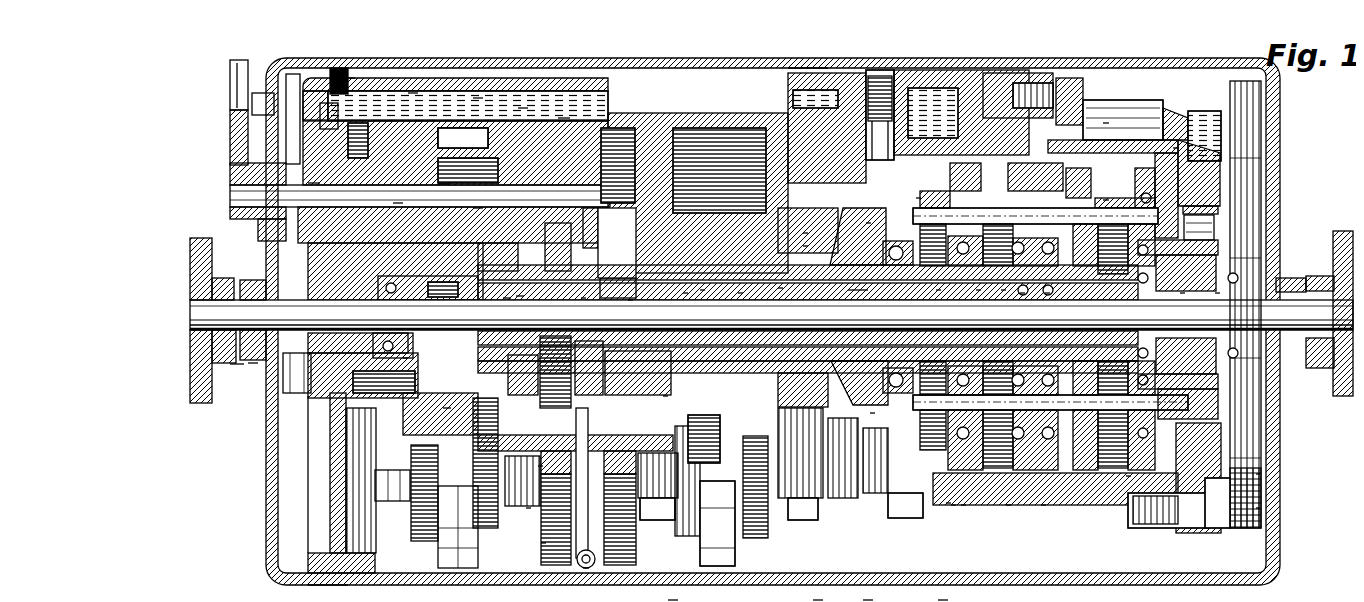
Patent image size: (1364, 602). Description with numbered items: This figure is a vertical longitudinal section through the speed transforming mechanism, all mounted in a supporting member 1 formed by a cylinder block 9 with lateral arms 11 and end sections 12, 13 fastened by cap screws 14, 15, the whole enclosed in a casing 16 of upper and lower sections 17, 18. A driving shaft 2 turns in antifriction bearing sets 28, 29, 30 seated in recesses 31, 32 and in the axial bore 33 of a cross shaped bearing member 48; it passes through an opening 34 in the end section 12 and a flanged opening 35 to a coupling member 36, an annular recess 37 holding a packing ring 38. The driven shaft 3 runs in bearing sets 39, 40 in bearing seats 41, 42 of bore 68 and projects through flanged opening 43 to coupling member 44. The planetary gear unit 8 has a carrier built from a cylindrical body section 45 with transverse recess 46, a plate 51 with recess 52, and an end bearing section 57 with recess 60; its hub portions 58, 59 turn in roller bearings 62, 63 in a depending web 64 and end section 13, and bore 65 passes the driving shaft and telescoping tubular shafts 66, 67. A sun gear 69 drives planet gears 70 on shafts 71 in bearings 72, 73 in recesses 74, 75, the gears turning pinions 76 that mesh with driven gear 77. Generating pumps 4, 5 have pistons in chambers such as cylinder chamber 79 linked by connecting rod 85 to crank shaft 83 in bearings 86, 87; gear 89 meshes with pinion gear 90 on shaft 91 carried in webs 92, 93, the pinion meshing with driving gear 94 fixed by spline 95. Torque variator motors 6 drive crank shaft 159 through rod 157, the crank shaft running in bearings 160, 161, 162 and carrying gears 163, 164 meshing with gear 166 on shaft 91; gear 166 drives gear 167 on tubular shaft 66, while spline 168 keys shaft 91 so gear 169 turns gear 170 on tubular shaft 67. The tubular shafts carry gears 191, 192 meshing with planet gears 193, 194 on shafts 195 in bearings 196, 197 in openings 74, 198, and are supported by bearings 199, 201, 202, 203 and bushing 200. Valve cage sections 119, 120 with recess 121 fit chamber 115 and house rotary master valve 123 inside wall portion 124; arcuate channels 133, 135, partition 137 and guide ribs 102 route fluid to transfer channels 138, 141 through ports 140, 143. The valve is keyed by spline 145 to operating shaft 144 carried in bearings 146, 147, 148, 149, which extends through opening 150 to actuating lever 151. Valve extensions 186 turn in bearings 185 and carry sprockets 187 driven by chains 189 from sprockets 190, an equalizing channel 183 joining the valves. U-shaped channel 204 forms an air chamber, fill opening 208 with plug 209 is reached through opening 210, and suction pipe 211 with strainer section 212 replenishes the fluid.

The supporting member 1 is at (860, 73).
The driving shaft 2 is at (297, 330).
The driven shaft 3 is at (1315, 282).
The generating pump 4 is at (722, 45).
The generating pump 5 is at (1096, 45).
The torque variator motors 6 is at (515, 100).
The planetary gear unit 8 is at (1130, 123).
The cylinder block 9 is at (655, 105).
The lateral arms 11 is at (628, 400).
The end section 12 is at (568, 258).
The end section 13 is at (1097, 115).
The cap screws 14 is at (262, 70).
The cap screws 15 is at (1076, 82).
The casing 16 is at (1223, 52).
The upper section 17 is at (790, 55).
The lower section 18 is at (338, 575).
The antifriction bearing set 28 is at (395, 338).
The antifriction bearing set 29 is at (513, 288).
The antifriction bearing set 30 is at (1015, 282).
The recess 31 is at (398, 352).
The recess 32 is at (500, 290).
The axial bore 33 is at (1040, 282).
The opening 34 is at (304, 294).
The flanged opening 35 is at (231, 355).
The coupling member 36 is at (233, 358).
The annular recess 37 is at (246, 357).
The packing ring 38 is at (226, 358).
The bearing set 39 is at (1142, 281).
The bearing set 40 is at (1228, 271).
The bearing seat 41 is at (1175, 281).
The bearing seat 42 is at (1210, 281).
The flanged opening 43 is at (1295, 262).
The coupling member 44 is at (1338, 233).
The cylindrical body section 45 is at (1170, 138).
The transverse recess 46 is at (1120, 468).
The cross shaped bearing member 48 is at (1020, 494).
The plate 51 is at (944, 175).
The transverse recess 52 is at (945, 157).
The end bearing section 57 is at (850, 235).
The hub portion 58 is at (797, 237).
The hub portion 59 is at (1210, 354).
The transverse recess 60 is at (910, 190).
The roller bearing 62 is at (797, 225).
The roller bearing 63 is at (1210, 220).
The depending web 64 is at (795, 178).
The axial bore 65 is at (835, 357).
The tubular shaft 66 is at (626, 273).
The tubular shaft 67 is at (867, 410).
The bore 68 is at (1210, 382).
The sun gear 69 is at (1085, 306).
The planet gears 70 is at (1084, 176).
The shafts 71 is at (1100, 192).
The antifriction bearings 72 is at (1017, 202).
The antifriction bearings 73 is at (1140, 145).
The recess 74 is at (1035, 497).
The recess 75 is at (1123, 517).
The pinions 76 is at (1095, 427).
The driven gear 77 is at (1133, 286).
The cylinder chamber 79 is at (428, 387).
The crank shaft 83 is at (430, 522).
The connecting rod 85 is at (437, 405).
The bearings 86 is at (397, 495).
The bearings 87 is at (520, 500).
The gear 89 is at (535, 535).
The pinion gear 90 is at (530, 460).
The shaft 91 is at (505, 443).
The web 92 is at (490, 405).
The web 93 is at (626, 247).
The driving gear 94 is at (571, 267).
The spline 95 is at (575, 286).
The guide ribs 102 is at (681, 600).
The chamber 115 is at (440, 290).
The cylindrical section 119 is at (380, 90).
The cylindrical section 120 is at (470, 90).
The axial cylindrical recess 121 is at (460, 110).
The rotary master valve 123 is at (470, 202).
The cylindrical wall portion 124 is at (462, 290).
The arcuate channel 133 is at (405, 85).
The arcuate channel 135 is at (558, 110).
The partition 137 is at (827, 599).
The transfer channel 138 is at (780, 45).
The port 140 is at (515, 100).
The transfer channel 141 is at (952, 599).
The port 143 is at (875, 599).
The operating shaft 144 is at (222, 190).
The spline 145 is at (436, 176).
The bearing 146 is at (390, 195).
The bearing 147 is at (590, 236).
The bearing 148 is at (310, 174).
The bearing 149 is at (590, 220).
The opening 150 is at (262, 218).
The actuating lever 151 is at (222, 166).
The rod 157 is at (731, 530).
The crank shaft 159 is at (669, 532).
The bearing 160 is at (666, 512).
The bearing 161 is at (788, 502).
The bearing 162 is at (883, 489).
The gear 163 is at (620, 390).
The gear 164 is at (672, 527).
The gear 166 is at (658, 390).
The gear 167 is at (622, 288).
The spline 168 is at (550, 396).
The gear 169 is at (732, 454).
The gear 170 is at (733, 281).
The equalizing channel 183 is at (935, 88).
The bearings 185 is at (1125, 99).
The reduced extensions 186 is at (1215, 108).
The sprockets 187 is at (1254, 88).
The chains 189 is at (1250, 500).
The sprockets 190 is at (1250, 466).
The gear 191 is at (995, 278).
The gear 192 is at (930, 278).
The planet gear 193 is at (988, 203).
The planet gear 194 is at (915, 180).
The shafts 195 is at (940, 495).
The antifriction bearings 196 is at (1000, 497).
The antifriction bearings 197 is at (945, 497).
The opening 198 is at (955, 497).
The bearing 199 is at (678, 280).
The bushing 200 is at (695, 278).
The bearing 201 is at (970, 278).
The antifriction bearing 202 is at (772, 276).
The bearing 203 is at (860, 213).
The U-shaped channel 204 is at (300, 100).
The fill opening 208 is at (335, 60).
The plug 209 is at (337, 68).
The opening 210 is at (318, 67).
The suction pipe 211 is at (586, 560).
The strainer section 212 is at (586, 567).